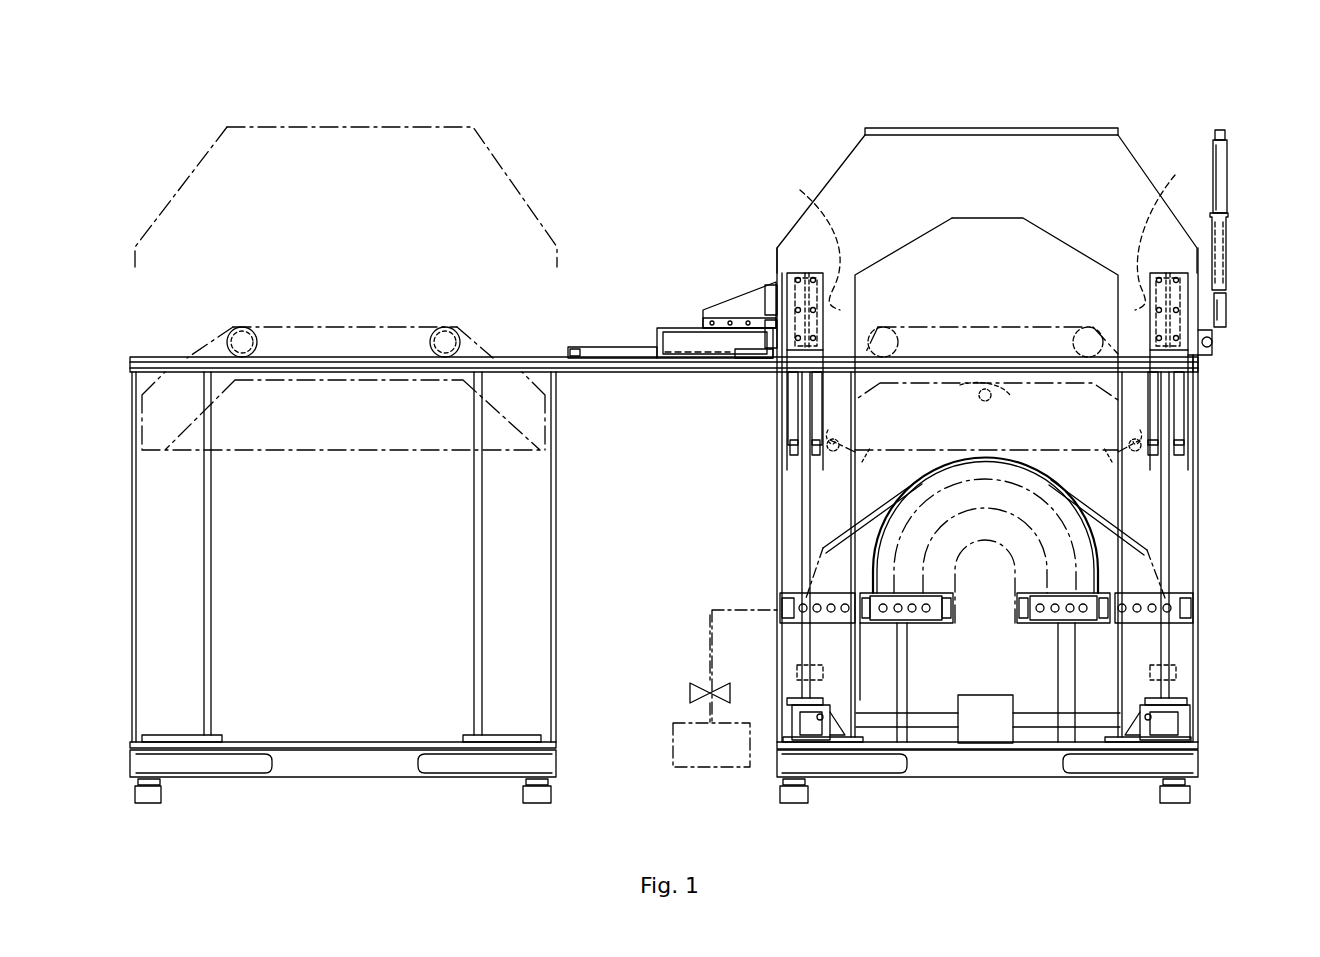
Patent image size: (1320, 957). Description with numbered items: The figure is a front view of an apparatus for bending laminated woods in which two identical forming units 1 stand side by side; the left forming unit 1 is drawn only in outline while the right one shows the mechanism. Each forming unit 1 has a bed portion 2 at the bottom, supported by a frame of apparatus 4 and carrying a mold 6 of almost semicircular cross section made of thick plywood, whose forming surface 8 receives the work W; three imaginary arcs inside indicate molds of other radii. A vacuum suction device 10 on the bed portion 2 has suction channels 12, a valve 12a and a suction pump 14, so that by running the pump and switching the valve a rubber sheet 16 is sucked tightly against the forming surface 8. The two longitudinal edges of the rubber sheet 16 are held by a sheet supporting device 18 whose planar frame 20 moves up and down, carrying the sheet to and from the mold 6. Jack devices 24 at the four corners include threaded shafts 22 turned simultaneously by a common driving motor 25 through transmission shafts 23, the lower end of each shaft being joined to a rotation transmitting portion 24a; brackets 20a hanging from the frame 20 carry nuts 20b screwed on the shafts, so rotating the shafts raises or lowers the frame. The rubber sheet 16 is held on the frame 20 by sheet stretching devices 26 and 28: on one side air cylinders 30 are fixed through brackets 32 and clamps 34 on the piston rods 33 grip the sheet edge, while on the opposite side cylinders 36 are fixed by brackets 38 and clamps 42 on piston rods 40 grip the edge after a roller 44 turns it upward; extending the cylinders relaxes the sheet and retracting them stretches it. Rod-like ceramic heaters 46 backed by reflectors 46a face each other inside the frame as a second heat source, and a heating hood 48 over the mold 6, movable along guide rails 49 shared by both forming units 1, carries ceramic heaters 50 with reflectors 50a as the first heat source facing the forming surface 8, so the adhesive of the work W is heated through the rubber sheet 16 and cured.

The forming unit 1 is at (130, 100).
The bed portion 2 is at (1206, 606).
The frame of apparatus 4 is at (132, 612).
The mold 6 is at (812, 572).
The forming surface 8 is at (1198, 625).
The vacuum suction device 10 is at (870, 628).
The suction channels 12 is at (700, 655).
The valve 12a is at (690, 694).
The suction pump 14 is at (678, 732).
The rubber sheet 16 is at (1040, 353).
The sheet supporting device 18 is at (1213, 365).
The frame 20 is at (462, 126).
The bracket 20a is at (857, 392).
The nut 20b is at (783, 415).
The threaded shaft 22 is at (778, 465).
The transmission shaft 23 is at (935, 723).
The jack device 24 is at (773, 701).
The rotation transmitting portion 24a is at (785, 718).
The driving motor 25 is at (988, 715).
The sheet stretching device 26 is at (674, 316).
The sheet stretching device 28 is at (1242, 277).
The air cylinder 30 is at (612, 358).
The bracket 32 is at (733, 310).
The piston rod 33 is at (676, 372).
The clamp 34 is at (745, 360).
The cylinder 36 is at (1226, 178).
The bracket 38 is at (1212, 236).
The piston rod 40 is at (1228, 256).
The clamp 42 is at (1226, 318).
The roller 44 is at (1216, 352).
The rod-like ceramic heater 46 is at (840, 304).
The reflector 46a is at (986, 229).
The heating hood 48 is at (374, 326).
The guide rail 49 is at (522, 357).
The ceramic heater 50 is at (980, 395).
The reflector 50a is at (987, 439).
The work W is at (862, 562).